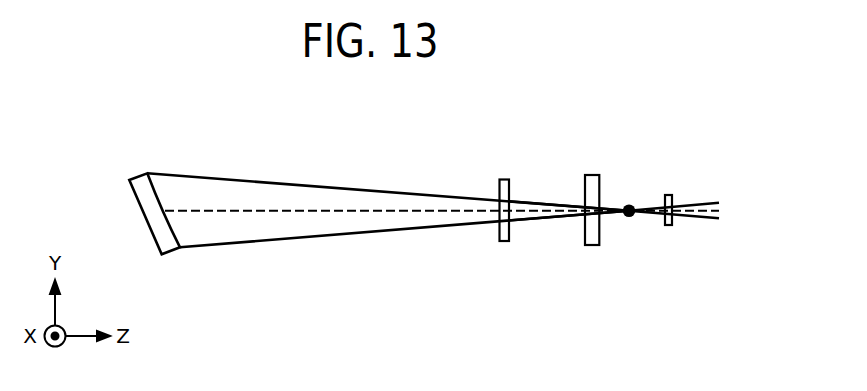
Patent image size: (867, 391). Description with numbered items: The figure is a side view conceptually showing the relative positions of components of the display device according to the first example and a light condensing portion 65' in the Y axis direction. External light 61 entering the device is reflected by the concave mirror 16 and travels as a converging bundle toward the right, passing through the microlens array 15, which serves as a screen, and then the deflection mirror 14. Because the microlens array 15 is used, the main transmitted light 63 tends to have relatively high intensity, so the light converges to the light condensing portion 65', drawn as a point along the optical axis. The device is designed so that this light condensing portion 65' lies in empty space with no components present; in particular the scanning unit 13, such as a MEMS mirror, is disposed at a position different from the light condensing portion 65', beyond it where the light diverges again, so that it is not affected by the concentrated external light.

The concave mirror 16 is at (133, 177).
The external light 61 is at (252, 181).
The main transmitted light 63 is at (549, 204).
The microlens array 15 is at (502, 178).
The deflection mirror 14 is at (590, 174).
The light condensing portion 65' is at (628, 184).
The scanning unit 13 is at (668, 194).